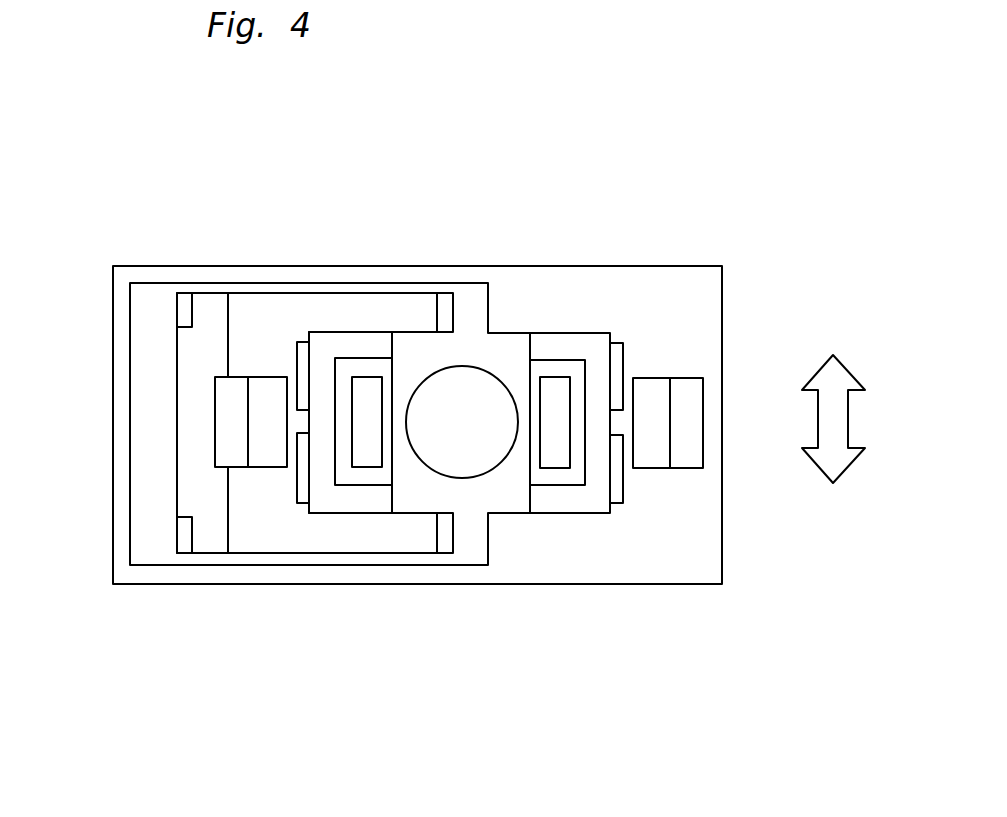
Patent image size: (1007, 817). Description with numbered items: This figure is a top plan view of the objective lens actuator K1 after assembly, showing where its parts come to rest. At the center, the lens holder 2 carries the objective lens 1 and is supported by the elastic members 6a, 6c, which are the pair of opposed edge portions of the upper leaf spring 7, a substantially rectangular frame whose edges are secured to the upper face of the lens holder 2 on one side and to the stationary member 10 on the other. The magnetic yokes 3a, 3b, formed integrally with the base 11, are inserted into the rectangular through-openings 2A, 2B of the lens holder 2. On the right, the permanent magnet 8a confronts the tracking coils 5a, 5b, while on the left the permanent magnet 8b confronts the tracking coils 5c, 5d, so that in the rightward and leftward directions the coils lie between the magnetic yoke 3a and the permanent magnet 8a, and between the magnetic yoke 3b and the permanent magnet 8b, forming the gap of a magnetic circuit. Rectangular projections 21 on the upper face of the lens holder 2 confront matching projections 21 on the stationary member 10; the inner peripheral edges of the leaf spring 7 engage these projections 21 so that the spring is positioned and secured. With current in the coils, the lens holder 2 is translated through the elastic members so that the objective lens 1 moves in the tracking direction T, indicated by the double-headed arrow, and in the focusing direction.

The objective lens 1 is at (467, 403).
The lens holder 2 is at (490, 308).
The rectangular through-opening 2A is at (545, 365).
The rectangular through-opening 2B is at (373, 348).
The magnetic yoke 3a is at (557, 390).
The magnetic yoke 3b is at (363, 395).
The tracking coil 5a is at (618, 360).
The tracking coil 5b is at (617, 488).
The tracking coil 5c is at (302, 483).
The tracking coil 5d is at (302, 358).
The elastic member 6a is at (390, 286).
The elastic member 6c is at (375, 560).
The leaf spring 7 is at (153, 430).
The permanent magnet 8a is at (657, 393).
The permanent magnet 8b is at (263, 395).
The stationary member 10 is at (190, 383).
The base 11 is at (647, 555).
The rectangular projection 21 is at (178, 310).
The objective lens actuator K1 is at (795, 215).
The tracking direction T is at (840, 419).